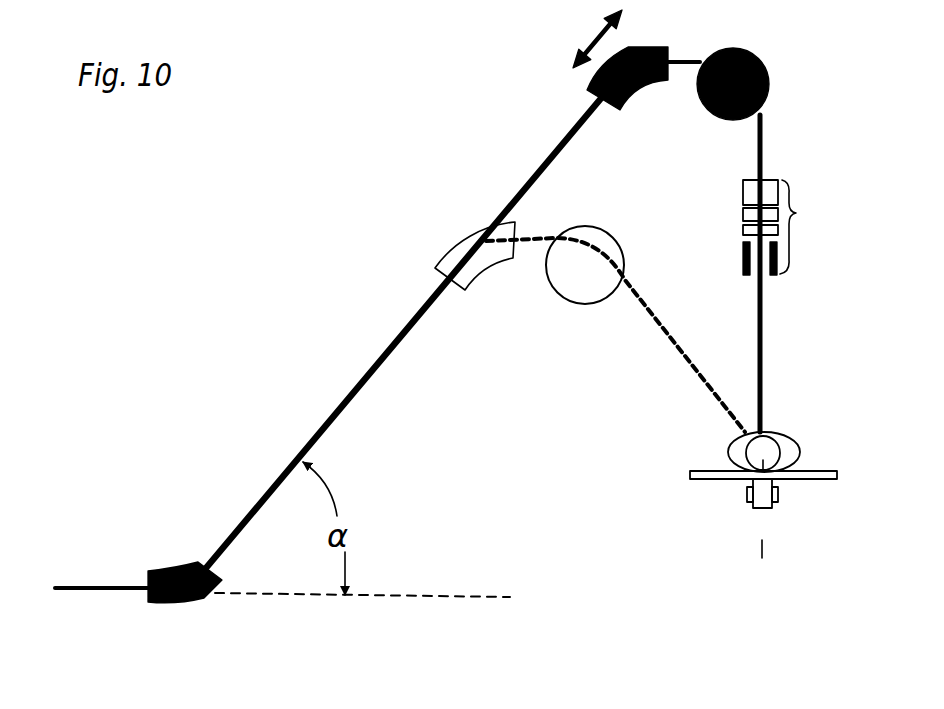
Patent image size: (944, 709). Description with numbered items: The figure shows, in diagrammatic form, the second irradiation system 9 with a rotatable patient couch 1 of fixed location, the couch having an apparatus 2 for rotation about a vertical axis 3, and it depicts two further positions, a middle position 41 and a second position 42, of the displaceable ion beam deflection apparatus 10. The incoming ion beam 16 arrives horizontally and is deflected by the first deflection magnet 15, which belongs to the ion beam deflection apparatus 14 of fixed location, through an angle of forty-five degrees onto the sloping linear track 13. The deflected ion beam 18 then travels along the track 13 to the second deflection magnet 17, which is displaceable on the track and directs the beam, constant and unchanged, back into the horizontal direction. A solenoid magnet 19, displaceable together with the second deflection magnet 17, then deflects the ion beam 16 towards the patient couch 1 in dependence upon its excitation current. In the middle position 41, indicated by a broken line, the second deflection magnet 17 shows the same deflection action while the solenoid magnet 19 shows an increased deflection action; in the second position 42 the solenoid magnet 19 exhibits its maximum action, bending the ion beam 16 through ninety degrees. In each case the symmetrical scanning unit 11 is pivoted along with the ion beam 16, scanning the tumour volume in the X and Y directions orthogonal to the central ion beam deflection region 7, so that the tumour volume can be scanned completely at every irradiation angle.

The patient couch 1 is at (806, 480).
The apparatus for rotation 2 is at (772, 494).
The vertical axis 3 is at (760, 511).
The central ion beam deflection region 7 is at (766, 142).
The second irradiation system 9 is at (340, 228).
The ion beam deflection apparatus 10 is at (552, 228).
The symmetrical scanning unit 11 is at (783, 227).
The sloping linear track 13 is at (531, 173).
The ion beam deflection apparatus of fixed location 14 is at (165, 546).
The first deflection magnet 15 is at (192, 550).
The ion beam 16 is at (95, 600).
The second deflection magnet 17 is at (656, 50).
The deflected ion beam 18 is at (265, 495).
The solenoid magnet 19 is at (755, 54).
The middle position 41 is at (527, 285).
The second position 42 is at (687, 110).